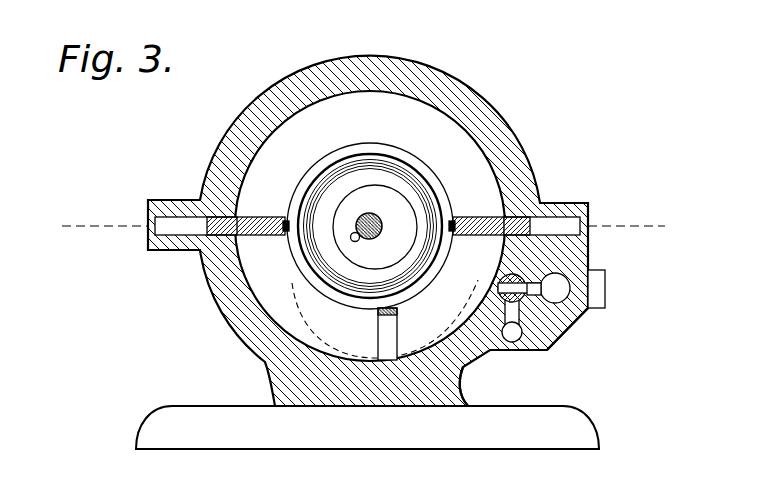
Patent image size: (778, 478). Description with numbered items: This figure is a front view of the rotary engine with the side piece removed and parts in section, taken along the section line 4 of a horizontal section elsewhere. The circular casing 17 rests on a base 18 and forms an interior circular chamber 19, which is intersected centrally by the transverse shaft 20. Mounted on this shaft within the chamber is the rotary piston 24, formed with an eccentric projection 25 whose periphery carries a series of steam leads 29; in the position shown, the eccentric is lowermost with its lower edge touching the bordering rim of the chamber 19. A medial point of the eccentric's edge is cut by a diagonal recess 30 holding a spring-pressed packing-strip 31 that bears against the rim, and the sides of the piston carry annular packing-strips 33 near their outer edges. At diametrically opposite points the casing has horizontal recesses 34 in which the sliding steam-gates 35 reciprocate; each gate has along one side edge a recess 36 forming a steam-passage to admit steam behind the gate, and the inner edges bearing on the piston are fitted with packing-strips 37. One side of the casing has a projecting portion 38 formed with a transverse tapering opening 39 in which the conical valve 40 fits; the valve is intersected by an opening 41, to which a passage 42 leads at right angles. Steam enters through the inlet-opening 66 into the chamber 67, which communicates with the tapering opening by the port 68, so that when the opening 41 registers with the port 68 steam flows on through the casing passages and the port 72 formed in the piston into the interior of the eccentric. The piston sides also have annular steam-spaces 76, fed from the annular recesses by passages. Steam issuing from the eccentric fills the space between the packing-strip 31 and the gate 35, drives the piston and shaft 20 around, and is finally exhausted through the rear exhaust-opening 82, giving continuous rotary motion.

The section line 4 is at (364, 225).
The circular casing 17 is at (503, 118).
The base 18 is at (597, 426).
The interior circular chamber 19 is at (370, 226).
The transverse shaft 20 is at (376, 216).
The rotary piston 24 is at (412, 161).
The eccentric projection 25 is at (283, 303).
The steam leads 29 is at (449, 318).
The diagonal recess 30 is at (377, 330).
The packing-strip 31 is at (393, 357).
The annular packing-strips 33 is at (316, 172).
The horizontal recesses 34 is at (558, 226).
The sliding steam-gate 35 is at (268, 217).
The recess 36 is at (264, 236).
The packing-strips 37 is at (287, 218).
The projecting portion 38 is at (574, 323).
The transverse tapering opening 39 is at (503, 320).
The conical valve 40 is at (563, 344).
The opening 41 is at (470, 368).
The passage 42 is at (516, 284).
The inlet-opening 66 is at (606, 295).
The chamber 67 is at (557, 289).
The port 68 is at (533, 291).
The port 72 is at (351, 235).
The annular steam-spaces 76 is at (373, 166).
The exhaust-opening 82 is at (514, 341).